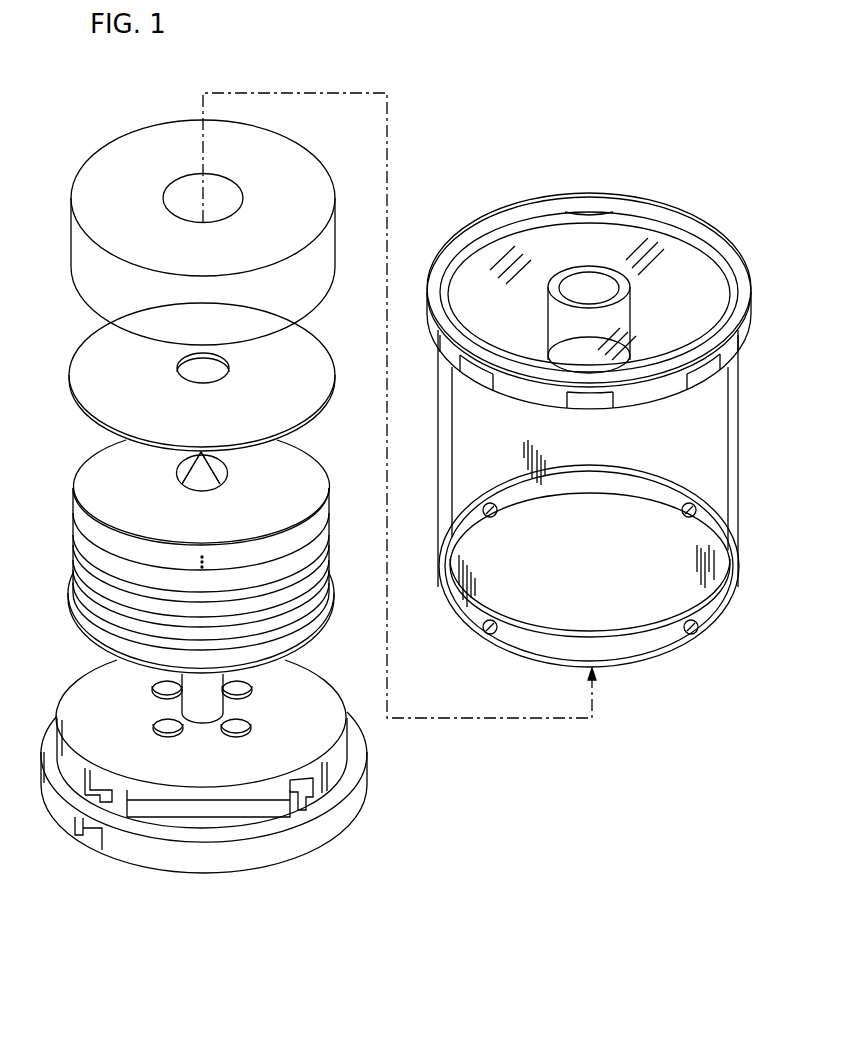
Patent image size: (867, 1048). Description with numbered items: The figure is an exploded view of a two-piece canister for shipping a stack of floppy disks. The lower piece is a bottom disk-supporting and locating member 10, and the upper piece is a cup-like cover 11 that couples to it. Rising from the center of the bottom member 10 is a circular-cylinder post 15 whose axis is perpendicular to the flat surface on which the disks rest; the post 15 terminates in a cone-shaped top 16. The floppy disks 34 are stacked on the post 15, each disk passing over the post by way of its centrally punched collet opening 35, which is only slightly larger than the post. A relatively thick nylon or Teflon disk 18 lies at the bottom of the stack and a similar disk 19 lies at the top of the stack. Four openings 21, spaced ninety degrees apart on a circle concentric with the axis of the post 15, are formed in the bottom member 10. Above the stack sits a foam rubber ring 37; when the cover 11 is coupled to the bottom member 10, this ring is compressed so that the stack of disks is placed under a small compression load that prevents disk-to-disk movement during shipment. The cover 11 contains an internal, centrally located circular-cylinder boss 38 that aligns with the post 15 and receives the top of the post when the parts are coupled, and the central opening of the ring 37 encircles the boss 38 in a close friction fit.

The bottom disk-supporting and locating member 10 is at (84, 847).
The cup-like cover 11 is at (743, 493).
The disk-locating circular-cylinder post 15 is at (216, 705).
The cone-shaped top 16 is at (195, 473).
The bottom nylon or Teflon disk 18 is at (92, 622).
The top nylon or Teflon disk 19 is at (92, 355).
The openings 21 is at (168, 725).
The disks 34 is at (67, 472).
The collet opening 35 is at (225, 473).
The foam rubber ring 37 is at (128, 153).
The circular-cylinder boss 38 is at (623, 312).